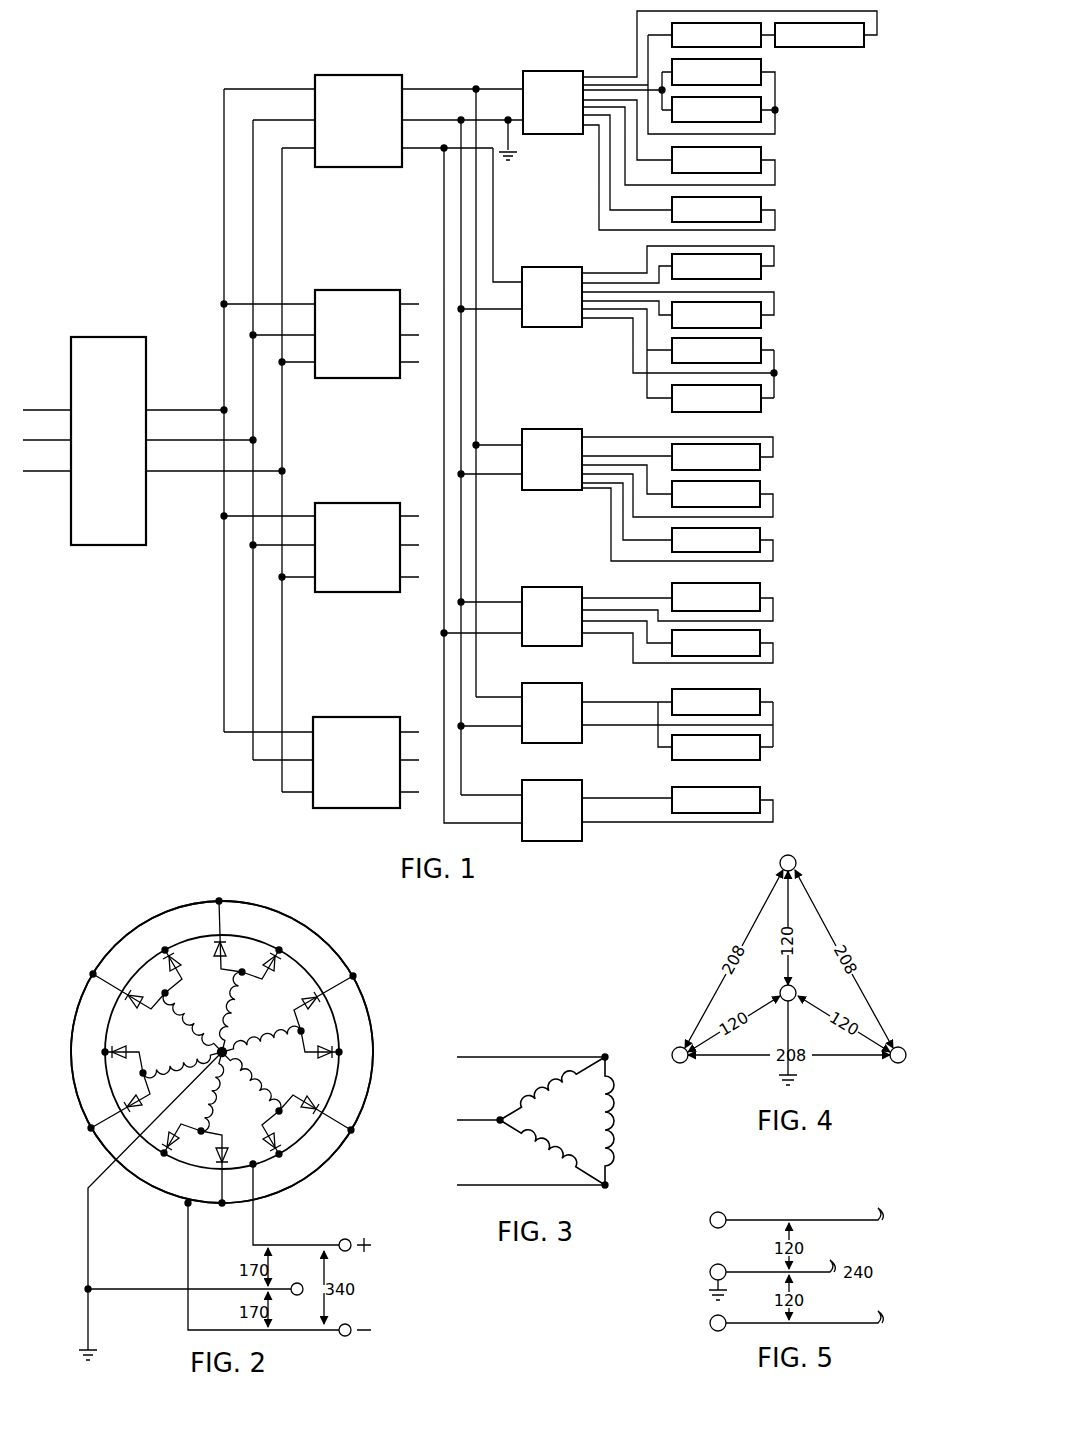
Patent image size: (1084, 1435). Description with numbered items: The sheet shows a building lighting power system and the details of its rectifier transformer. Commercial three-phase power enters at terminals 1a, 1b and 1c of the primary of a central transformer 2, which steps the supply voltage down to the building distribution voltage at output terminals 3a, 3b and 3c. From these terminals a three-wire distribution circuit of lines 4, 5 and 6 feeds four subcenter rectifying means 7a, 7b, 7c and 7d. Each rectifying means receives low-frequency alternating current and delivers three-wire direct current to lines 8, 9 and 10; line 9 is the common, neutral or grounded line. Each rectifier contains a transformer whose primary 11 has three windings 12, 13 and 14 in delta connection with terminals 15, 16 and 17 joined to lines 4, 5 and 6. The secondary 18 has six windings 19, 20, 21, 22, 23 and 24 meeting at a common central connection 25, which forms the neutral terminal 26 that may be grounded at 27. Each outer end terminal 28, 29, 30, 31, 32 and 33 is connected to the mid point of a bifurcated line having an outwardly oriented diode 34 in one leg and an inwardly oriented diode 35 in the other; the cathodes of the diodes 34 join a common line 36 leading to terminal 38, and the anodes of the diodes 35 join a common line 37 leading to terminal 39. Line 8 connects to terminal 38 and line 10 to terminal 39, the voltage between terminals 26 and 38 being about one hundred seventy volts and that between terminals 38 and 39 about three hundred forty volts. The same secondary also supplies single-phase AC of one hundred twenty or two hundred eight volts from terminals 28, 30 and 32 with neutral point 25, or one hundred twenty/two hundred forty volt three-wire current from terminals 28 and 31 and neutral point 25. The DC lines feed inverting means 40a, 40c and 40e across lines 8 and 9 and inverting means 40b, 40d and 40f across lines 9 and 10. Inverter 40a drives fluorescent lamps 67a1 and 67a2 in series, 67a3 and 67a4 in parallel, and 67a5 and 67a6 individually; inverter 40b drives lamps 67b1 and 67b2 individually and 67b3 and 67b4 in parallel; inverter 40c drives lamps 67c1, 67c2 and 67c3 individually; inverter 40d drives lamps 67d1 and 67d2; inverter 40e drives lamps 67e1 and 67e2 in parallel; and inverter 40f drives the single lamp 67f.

In FIG. 1, the primary terminal 1a is at (25, 410).
In FIG. 1, the primary terminal 1b is at (25, 440).
In FIG. 1, the primary terminal 1c is at (25, 471).
In FIG. 1, the transformer 2 is at (108, 441).
In FIG. 1, the output terminal 3a is at (200, 409).
In FIG. 1, the output terminal 3b is at (200, 439).
In FIG. 1, the output terminal 3c is at (200, 470).
In FIG. 1, the distribution line 4 is at (224, 211).
In FIG. 3, the distribution line 4 is at (466, 1057).
In FIG. 1, the distribution line 5 is at (253, 234).
In FIG. 3, the distribution line 5 is at (473, 1119).
In FIG. 1, the distribution line 6 is at (282, 253).
In FIG. 3, the distribution line 6 is at (475, 1185).
In FIG. 1, the rectifying means 7a is at (360, 75).
In FIG. 1, the rectifying means 7b is at (360, 288).
In FIG. 1, the rectifying means 7c is at (360, 501).
In FIG. 1, the rectifying means 7d is at (360, 716).
In FIG. 1, the DC line 8 is at (447, 87).
In FIG. 1, the neutral line 9 is at (447, 118).
In FIG. 1, the DC line 10 is at (447, 146).
In FIG. 3, the primary 11 is at (548, 1045).
In FIG. 3, the primary winding 12 is at (596, 1112).
In FIG. 3, the primary winding 13 is at (536, 1081).
In FIG. 3, the primary winding 14 is at (554, 1158).
In FIG. 3, the primary terminal 15 is at (605, 1057).
In FIG. 3, the primary terminal 16 is at (486, 1131).
In FIG. 3, the primary terminal 17 is at (605, 1185).
In FIG. 2, the secondary 18 is at (132, 918).
In FIG. 2, the secondary winding 19 is at (235, 997).
In FIG. 2, the secondary winding 20 is at (260, 1044).
In FIG. 2, the secondary winding 21 is at (264, 1090).
In FIG. 2, the secondary winding 22 is at (210, 1110).
In FIG. 2, the secondary winding 23 is at (184, 1060).
In FIG. 2, the secondary winding 24 is at (184, 995).
In FIG. 2, the central connection 25 is at (226, 1060).
In FIG. 4, the central connection 25 is at (798, 990).
In FIG. 5, the central connection 25 is at (716, 1270).
In FIG. 1, the neutral terminal 26 is at (397, 120).
In FIG. 2, the neutral terminal 26 is at (292, 1283).
In FIG. 1, the ground 27 is at (516, 155).
In FIG. 2, the ground 27 is at (78, 1352).
In FIG. 2, the end terminal 28 is at (280, 953).
In FIG. 4, the end terminal 28 is at (797, 861).
In FIG. 5, the end terminal 28 is at (716, 1212).
In FIG. 2, the end terminal 29 is at (325, 1014).
In FIG. 2, the end terminal 30 is at (280, 1117).
In FIG. 4, the end terminal 30 is at (902, 1063).
In FIG. 2, the end terminal 31 is at (202, 1136).
In FIG. 5, the end terminal 31 is at (716, 1332).
In FIG. 2, the end terminal 32 is at (142, 1074).
In FIG. 4, the end terminal 32 is at (676, 1063).
In FIG. 2, the end terminal 33 is at (164, 993).
In FIG. 2, the outwardly oriented diode 34 is at (172, 954).
In FIG. 2, the inwardly oriented diode 35 is at (236, 938).
In FIG. 2, the common line 36 is at (332, 1128).
In FIG. 2, the common line 37 is at (318, 1176).
In FIG. 1, the output terminal 38 is at (397, 89).
In FIG. 2, the output terminal 38 is at (348, 1239).
In FIG. 1, the output terminal 39 is at (397, 148).
In FIG. 2, the output terminal 39 is at (346, 1344).
In FIG. 1, the inverting means 40a is at (545, 71).
In FIG. 1, the inverting means 40b is at (584, 267).
In FIG. 1, the inverting means 40c is at (584, 429).
In FIG. 1, the inverting means 40d is at (584, 587).
In FIG. 1, the inverting means 40e is at (584, 683).
In FIG. 1, the inverting means 40f is at (584, 780).
In FIG. 1, the fluorescent lamp 67a1 is at (716, 35).
In FIG. 1, the fluorescent lamp 67a2 is at (819, 35).
In FIG. 1, the fluorescent lamp 67a3 is at (716, 72).
In FIG. 1, the fluorescent lamp 67a4 is at (716, 109).
In FIG. 1, the fluorescent lamp 67a5 is at (716, 160).
In FIG. 1, the fluorescent lamp 67a6 is at (716, 209).
In FIG. 1, the fluorescent lamp 67b1 is at (716, 266).
In FIG. 1, the fluorescent lamp 67b2 is at (716, 315).
In FIG. 1, the fluorescent lamp 67b3 is at (716, 350).
In FIG. 1, the fluorescent lamp 67b4 is at (716, 398).
In FIG. 1, the fluorescent lamp 67c1 is at (716, 457).
In FIG. 1, the fluorescent lamp 67c2 is at (716, 494).
In FIG. 1, the fluorescent lamp 67c3 is at (716, 540).
In FIG. 1, the fluorescent lamp 67d1 is at (716, 597).
In FIG. 1, the fluorescent lamp 67d2 is at (716, 643).
In FIG. 1, the fluorescent lamp 67e1 is at (716, 702).
In FIG. 1, the fluorescent lamp 67e2 is at (716, 747).
In FIG. 1, the fluorescent lamp 67f is at (716, 800).